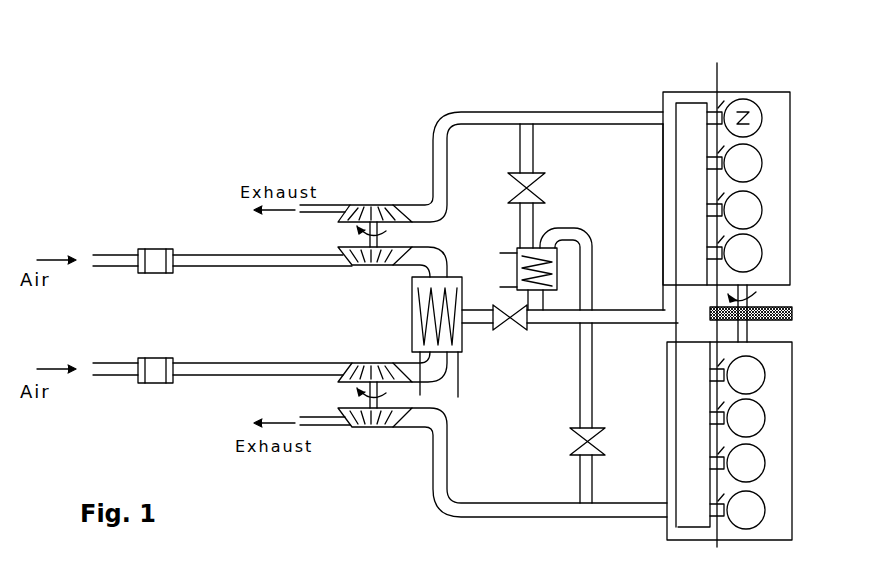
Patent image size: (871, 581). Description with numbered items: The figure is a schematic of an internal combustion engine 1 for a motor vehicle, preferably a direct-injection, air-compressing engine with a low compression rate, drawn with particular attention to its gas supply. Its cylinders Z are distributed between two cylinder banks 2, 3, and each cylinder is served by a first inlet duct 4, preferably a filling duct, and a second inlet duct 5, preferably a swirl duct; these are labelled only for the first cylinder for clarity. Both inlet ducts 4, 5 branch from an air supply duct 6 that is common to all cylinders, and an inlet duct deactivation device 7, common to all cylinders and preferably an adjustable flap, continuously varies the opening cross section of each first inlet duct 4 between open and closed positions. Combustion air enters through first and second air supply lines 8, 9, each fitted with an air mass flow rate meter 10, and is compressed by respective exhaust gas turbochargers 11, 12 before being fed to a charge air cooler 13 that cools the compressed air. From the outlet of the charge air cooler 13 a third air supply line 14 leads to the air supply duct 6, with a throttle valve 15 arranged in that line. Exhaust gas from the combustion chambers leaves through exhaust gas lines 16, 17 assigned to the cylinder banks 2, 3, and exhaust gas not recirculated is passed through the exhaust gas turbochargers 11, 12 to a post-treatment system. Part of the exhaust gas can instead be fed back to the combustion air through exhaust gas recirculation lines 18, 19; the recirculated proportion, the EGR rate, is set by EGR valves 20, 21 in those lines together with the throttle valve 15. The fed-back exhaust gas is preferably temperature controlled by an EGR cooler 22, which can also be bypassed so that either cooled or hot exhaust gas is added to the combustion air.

The internal combustion engine 1 is at (247, 112).
The first cylinder bank 2 is at (790, 265).
The second cylinder bank 3 is at (790, 522).
The first inlet duct 4 is at (718, 94).
The second inlet duct 5 is at (724, 140).
The air supply duct 6 is at (680, 112).
The inlet duct deactivation device 7 is at (714, 63).
The first air supply line 8 is at (213, 267).
The second air supply line 9 is at (213, 363).
The air mass flow rate meter 10 is at (148, 275).
The first exhaust gas turbocharger 11 is at (324, 233).
The second exhaust gas turbocharger 12 is at (324, 398).
The charge air cooler 13 is at (413, 318).
The third air supply line 14 is at (625, 324).
The throttle valve 15 is at (503, 331).
The first exhaust gas line 16 is at (455, 122).
The second exhaust gas line 17 is at (455, 510).
The first exhaust gas recirculation line 18 is at (533, 157).
The second exhaust gas recirculation line 19 is at (583, 478).
The first EGR valve 20 is at (533, 197).
The second EGR valve 21 is at (575, 430).
The EGR cooler 22 is at (517, 253).